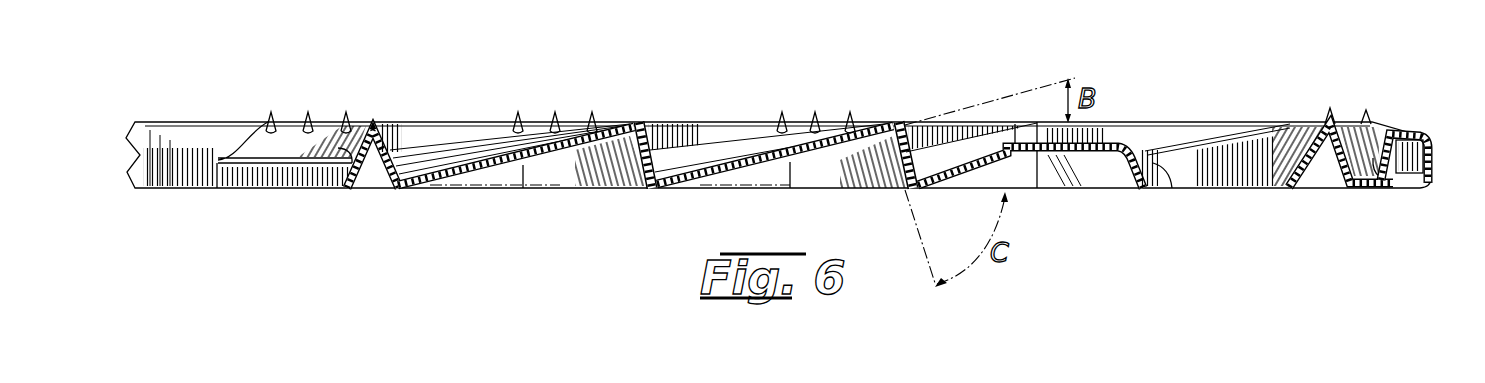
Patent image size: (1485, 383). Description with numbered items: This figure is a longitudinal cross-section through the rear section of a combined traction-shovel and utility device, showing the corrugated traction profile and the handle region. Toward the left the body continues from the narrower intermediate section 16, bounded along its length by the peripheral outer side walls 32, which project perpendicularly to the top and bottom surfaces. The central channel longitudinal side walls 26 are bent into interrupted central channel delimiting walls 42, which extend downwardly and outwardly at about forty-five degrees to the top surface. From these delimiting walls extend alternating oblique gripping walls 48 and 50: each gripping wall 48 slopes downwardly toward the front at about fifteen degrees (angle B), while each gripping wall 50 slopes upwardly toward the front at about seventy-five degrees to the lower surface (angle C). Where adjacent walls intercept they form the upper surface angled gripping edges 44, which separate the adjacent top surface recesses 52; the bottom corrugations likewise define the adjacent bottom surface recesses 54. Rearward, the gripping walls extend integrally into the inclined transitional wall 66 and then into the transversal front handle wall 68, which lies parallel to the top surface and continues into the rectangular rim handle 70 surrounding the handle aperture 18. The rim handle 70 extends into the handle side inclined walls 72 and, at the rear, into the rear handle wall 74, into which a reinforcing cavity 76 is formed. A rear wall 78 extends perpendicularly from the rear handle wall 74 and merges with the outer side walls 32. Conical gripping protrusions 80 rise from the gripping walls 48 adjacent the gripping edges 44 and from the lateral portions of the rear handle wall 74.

The intermediate section 16 is at (235, 84).
The handle aperture 18 is at (1261, 149).
The central channel longitudinal side walls 26 is at (750, 173).
The peripheral outer side walls 32 is at (167, 147).
The central channel delimiting walls 42 is at (708, 137).
The upper surface angled gripping edges 44 is at (641, 120).
The gripping walls 48 is at (478, 137).
The gripping walls 50 is at (585, 173).
The top surface recesses 52 is at (399, 139).
The bottom surface recesses 54 is at (561, 164).
The rear section inclined transitional wall 66 is at (1032, 135).
The front handle wall 68 is at (1102, 145).
The rim handle 70 is at (1160, 167).
The handle side inclined walls 72 is at (1190, 147).
The rear handle wall 74 is at (1385, 133).
The reinforcing cavity 76 is at (1372, 185).
The rear wall 78 is at (1433, 160).
The gripping protrusions 80 is at (850, 114).